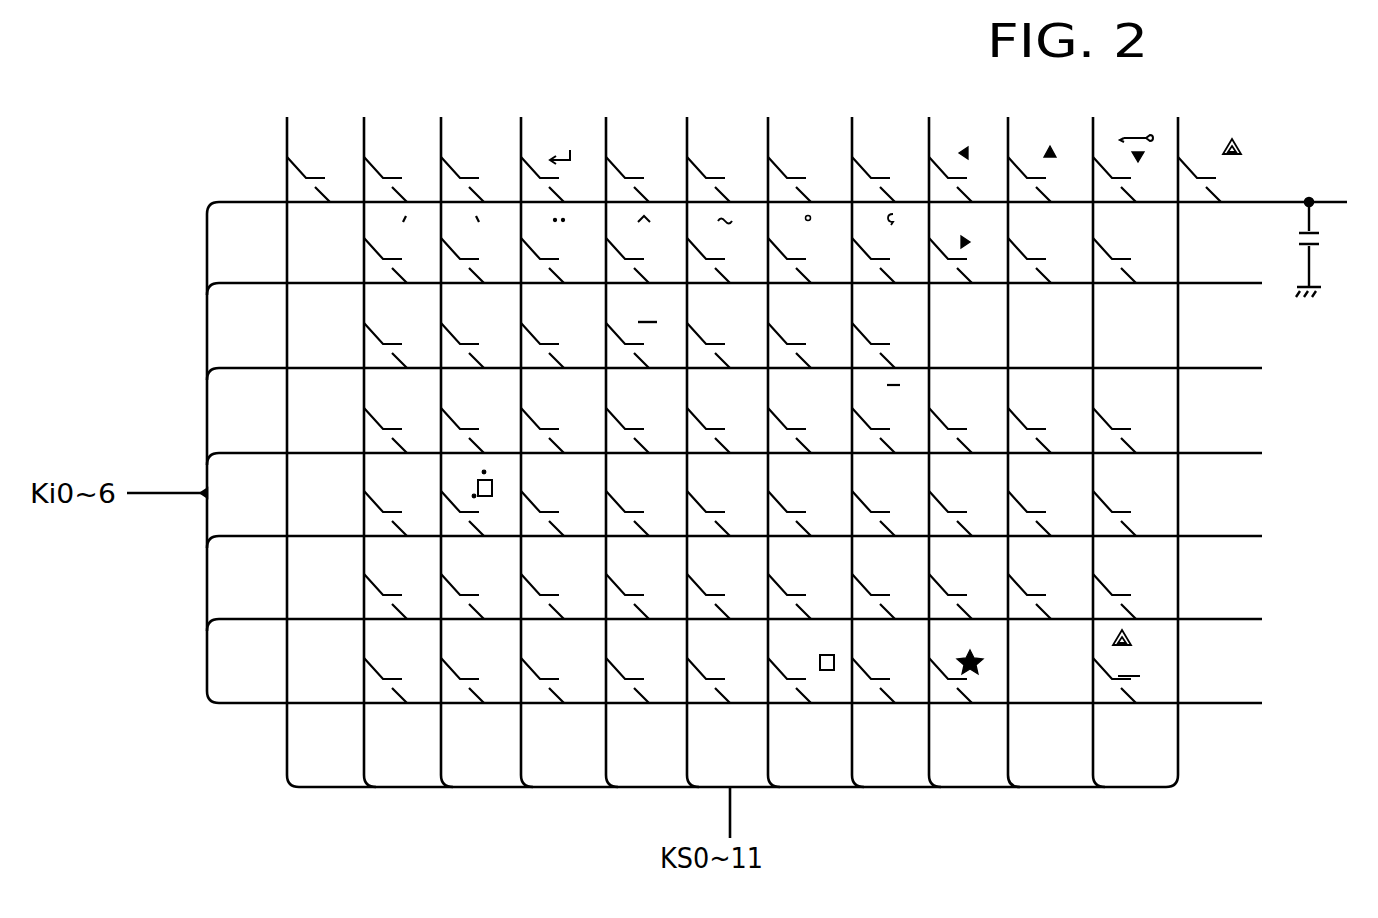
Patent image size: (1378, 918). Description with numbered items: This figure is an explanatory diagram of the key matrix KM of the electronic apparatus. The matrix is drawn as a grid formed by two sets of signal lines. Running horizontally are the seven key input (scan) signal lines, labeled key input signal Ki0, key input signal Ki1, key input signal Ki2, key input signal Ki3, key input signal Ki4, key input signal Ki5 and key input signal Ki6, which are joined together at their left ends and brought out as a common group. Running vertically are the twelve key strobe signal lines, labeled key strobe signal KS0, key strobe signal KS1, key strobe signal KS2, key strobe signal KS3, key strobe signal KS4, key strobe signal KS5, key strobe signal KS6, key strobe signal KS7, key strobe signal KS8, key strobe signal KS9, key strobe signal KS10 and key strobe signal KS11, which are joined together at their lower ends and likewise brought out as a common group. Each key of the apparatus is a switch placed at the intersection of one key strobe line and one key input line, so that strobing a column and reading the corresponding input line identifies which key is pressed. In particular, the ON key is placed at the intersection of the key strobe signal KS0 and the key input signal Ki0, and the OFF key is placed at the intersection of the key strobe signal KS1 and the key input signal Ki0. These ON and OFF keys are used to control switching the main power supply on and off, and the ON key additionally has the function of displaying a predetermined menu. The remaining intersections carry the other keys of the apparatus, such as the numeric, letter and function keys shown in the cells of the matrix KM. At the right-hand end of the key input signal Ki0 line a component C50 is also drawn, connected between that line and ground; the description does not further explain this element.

The key matrix KM is at (640, 62).
The capacitor C50 is at (1336, 247).
The key input signal Ki0 is at (777, 190).
The key input signal Ki1 is at (734, 273).
The key input signal Ki2 is at (734, 359).
The key input signal Ki3 is at (734, 444).
The key input signal Ki4 is at (734, 527).
The key input signal Ki5 is at (734, 610).
The key input signal Ki6 is at (734, 688).
The key strobe signal KS0 is at (314, 452).
The key strobe signal KS1 is at (392, 452).
The key strobe signal KS2 is at (469, 452).
The key strobe signal KS3 is at (549, 452).
The key strobe signal KS4 is at (634, 452).
The key strobe signal KS5 is at (715, 452).
The key strobe signal KS6 is at (796, 452).
The key strobe signal KS7 is at (880, 452).
The key strobe signal KS8 is at (957, 452).
The key strobe signal KS9 is at (1036, 452).
The key strobe signal KS10 is at (1129, 452).
The key strobe signal KS11 is at (1211, 452).